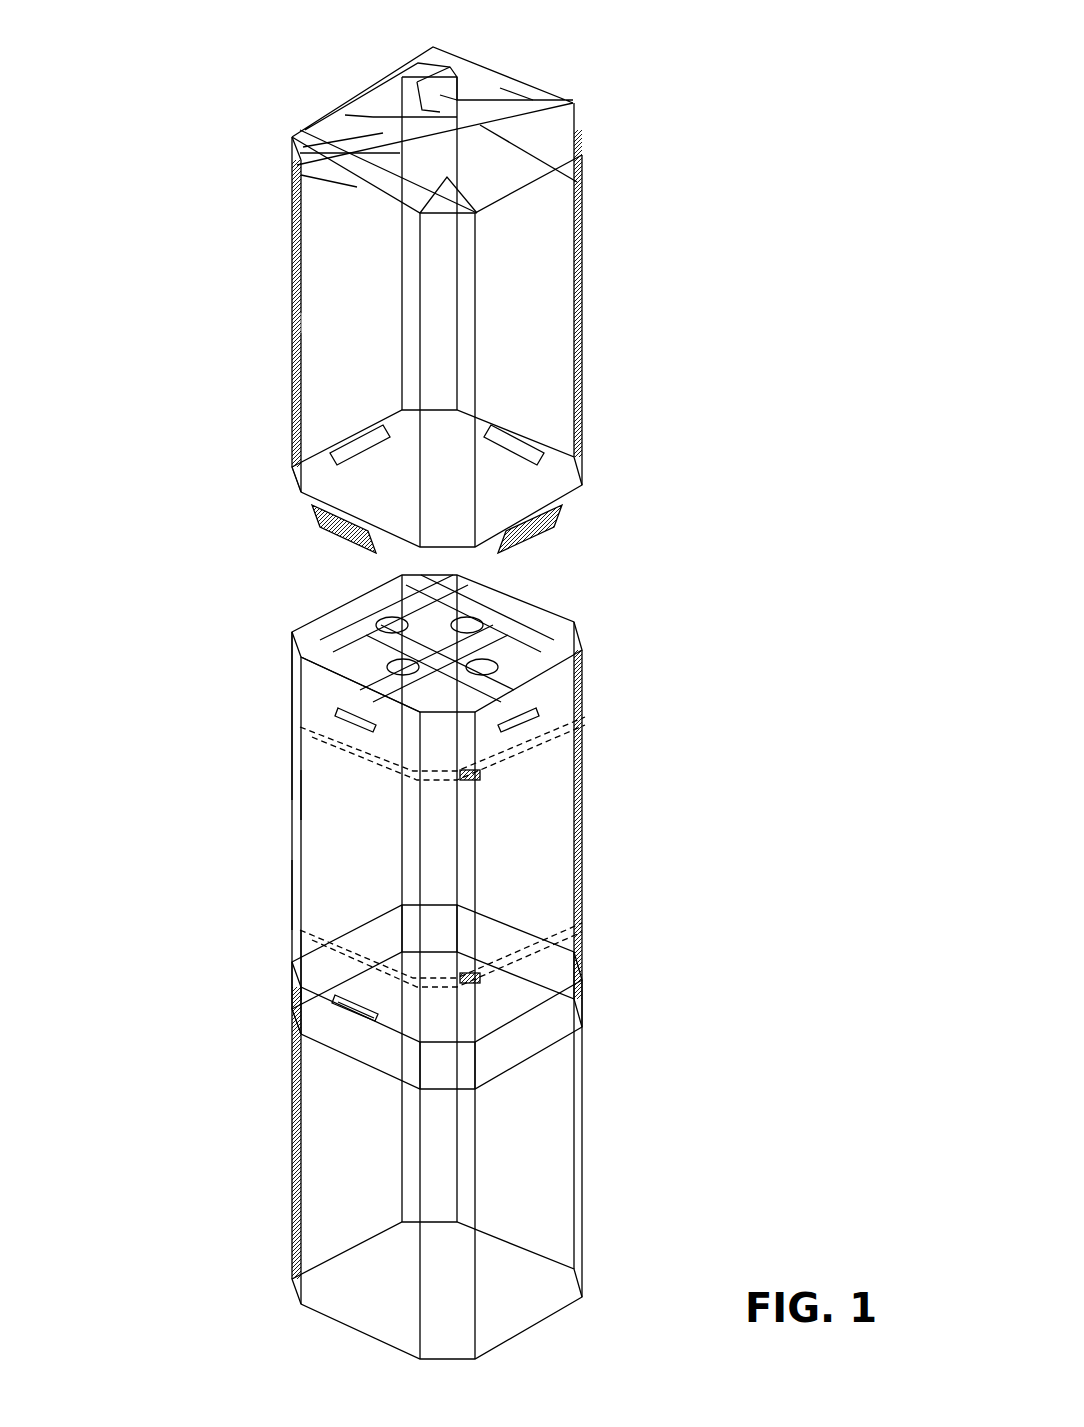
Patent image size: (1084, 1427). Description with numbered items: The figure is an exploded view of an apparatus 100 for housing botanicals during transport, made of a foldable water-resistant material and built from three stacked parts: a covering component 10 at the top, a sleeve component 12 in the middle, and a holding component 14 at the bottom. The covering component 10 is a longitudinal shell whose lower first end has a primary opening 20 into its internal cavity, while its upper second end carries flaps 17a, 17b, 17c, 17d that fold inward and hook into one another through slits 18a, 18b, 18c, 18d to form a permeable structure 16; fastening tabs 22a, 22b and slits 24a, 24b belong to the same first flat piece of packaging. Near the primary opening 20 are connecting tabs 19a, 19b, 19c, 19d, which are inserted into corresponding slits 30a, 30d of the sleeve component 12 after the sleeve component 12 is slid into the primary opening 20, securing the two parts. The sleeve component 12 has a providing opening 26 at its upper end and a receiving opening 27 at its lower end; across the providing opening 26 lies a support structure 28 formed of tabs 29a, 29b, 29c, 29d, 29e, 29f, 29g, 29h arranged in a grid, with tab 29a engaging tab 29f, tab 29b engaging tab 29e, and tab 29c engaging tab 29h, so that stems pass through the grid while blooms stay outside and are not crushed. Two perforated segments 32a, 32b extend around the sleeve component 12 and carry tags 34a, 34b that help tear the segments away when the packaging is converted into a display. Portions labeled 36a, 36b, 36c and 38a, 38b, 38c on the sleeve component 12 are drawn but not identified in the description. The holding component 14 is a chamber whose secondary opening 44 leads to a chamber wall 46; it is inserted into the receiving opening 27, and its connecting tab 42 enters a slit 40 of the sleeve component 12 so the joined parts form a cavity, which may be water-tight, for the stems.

The apparatus 100 is at (762, 229).
The covering component 10 is at (268, 305).
The sleeve component 12 is at (235, 868).
The holding component 14 is at (263, 1158).
The permeable structure 16 is at (570, 192).
The flap 17a is at (393, 95).
The flap 17b is at (417, 80).
The flap 17c is at (490, 120).
The flap 17d is at (383, 133).
The slit 18a is at (363, 107).
The slit 18b is at (433, 70).
The slit 18c is at (533, 100).
The slit 18d is at (357, 187).
The connecting tab 19a is at (330, 470).
The connecting tab 19b is at (535, 447).
The connecting tab 19c is at (565, 528).
The connecting tab 19d is at (330, 547).
The primary opening 20 is at (560, 490).
The fastening tab 22a is at (290, 252).
The fastening tab 22b is at (290, 400).
The slit 24a is at (288, 207).
The slit 24b is at (288, 357).
The providing opening 26 is at (505, 592).
The receiving opening 27 is at (495, 1088).
The support structure 28 is at (567, 650).
The tab 29a is at (323, 632).
The tab 29b is at (380, 583).
The tab 29c is at (467, 592).
The tab 29d is at (560, 610).
The tab 29e is at (570, 668).
The tab 29f is at (560, 700).
The tab 29g is at (400, 718).
The tab 29h is at (323, 657).
The slit 30a is at (352, 722).
The slit 30d is at (560, 745).
The perforated segment 32a is at (560, 815).
The perforated segment 32b is at (517, 950).
The tag 34a is at (470, 780).
The tag 34b is at (477, 995).
The side panel 36a is at (405, 697).
The side panel 36b is at (290, 770).
The side panel 36c is at (290, 930).
The side panel 38a is at (290, 672).
The side panel 38b is at (290, 745).
The side panel 38c is at (290, 872).
The slit 40 is at (380, 1035).
The connecting tab 42 is at (348, 1000).
The secondary opening 44 is at (490, 1017).
The chamber wall 46 is at (507, 1318).